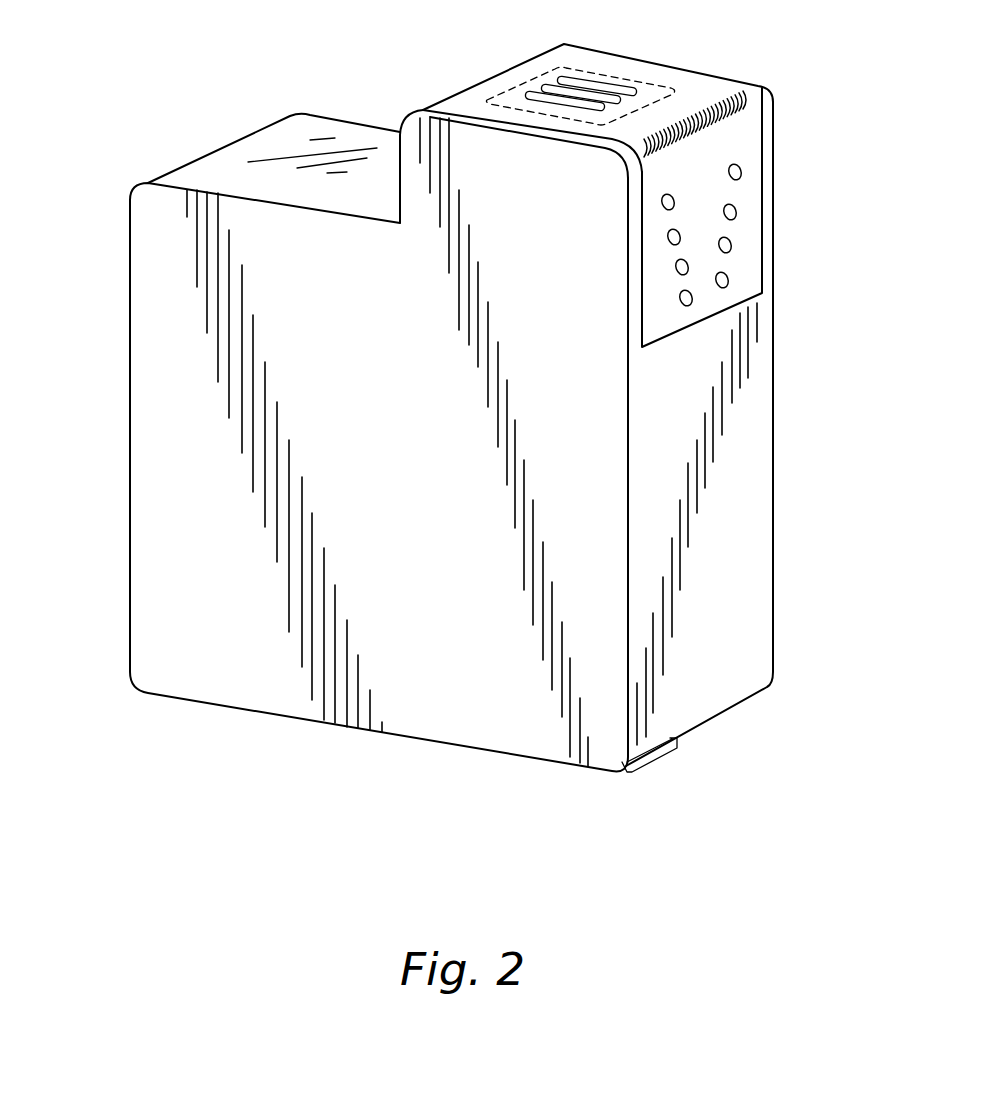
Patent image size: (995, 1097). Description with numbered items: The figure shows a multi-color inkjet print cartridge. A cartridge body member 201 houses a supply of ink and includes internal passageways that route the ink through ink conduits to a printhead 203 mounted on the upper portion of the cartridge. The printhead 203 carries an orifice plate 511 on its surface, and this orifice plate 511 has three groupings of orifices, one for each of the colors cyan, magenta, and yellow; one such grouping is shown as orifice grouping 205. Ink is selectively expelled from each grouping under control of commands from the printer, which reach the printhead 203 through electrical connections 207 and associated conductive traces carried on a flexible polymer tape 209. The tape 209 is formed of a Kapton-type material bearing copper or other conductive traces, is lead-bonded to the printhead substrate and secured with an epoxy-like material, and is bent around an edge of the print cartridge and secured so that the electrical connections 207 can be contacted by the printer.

The cartridge body member 201 is at (147, 280).
The printhead 203 is at (476, 73).
The orifice grouping 205 is at (562, 80).
The electrical connections 207 is at (729, 244).
The flexible polymer tape 209 is at (755, 133).
The orifice plate 511 is at (666, 60).